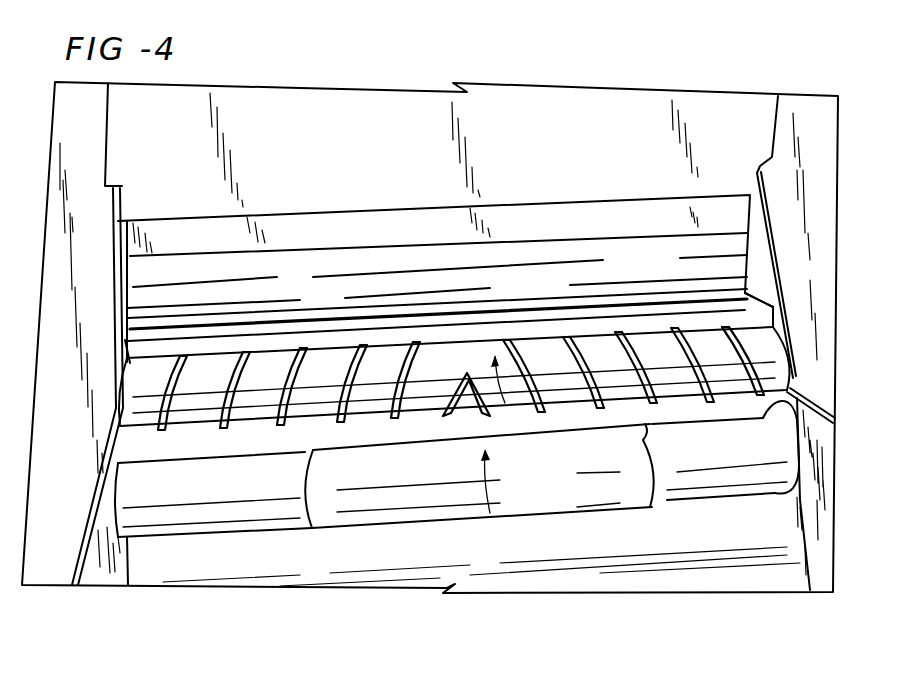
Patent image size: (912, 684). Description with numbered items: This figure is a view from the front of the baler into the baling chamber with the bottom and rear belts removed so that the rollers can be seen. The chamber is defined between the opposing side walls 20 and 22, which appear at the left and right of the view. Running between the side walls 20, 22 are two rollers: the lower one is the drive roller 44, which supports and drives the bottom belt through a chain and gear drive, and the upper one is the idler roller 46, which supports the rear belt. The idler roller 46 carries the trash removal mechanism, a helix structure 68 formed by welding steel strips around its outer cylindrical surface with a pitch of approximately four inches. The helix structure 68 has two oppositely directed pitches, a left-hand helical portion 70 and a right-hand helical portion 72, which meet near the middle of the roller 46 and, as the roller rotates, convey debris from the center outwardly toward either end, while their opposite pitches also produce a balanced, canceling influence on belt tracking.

The side wall 20 is at (785, 153).
The side wall 22 is at (97, 229).
The drive roller 44 is at (420, 521).
The idler roller 46 is at (765, 348).
The helix structure 68 is at (468, 368).
The left-hand helical portion 70 is at (303, 357).
The right-hand helical portion 72 is at (621, 333).